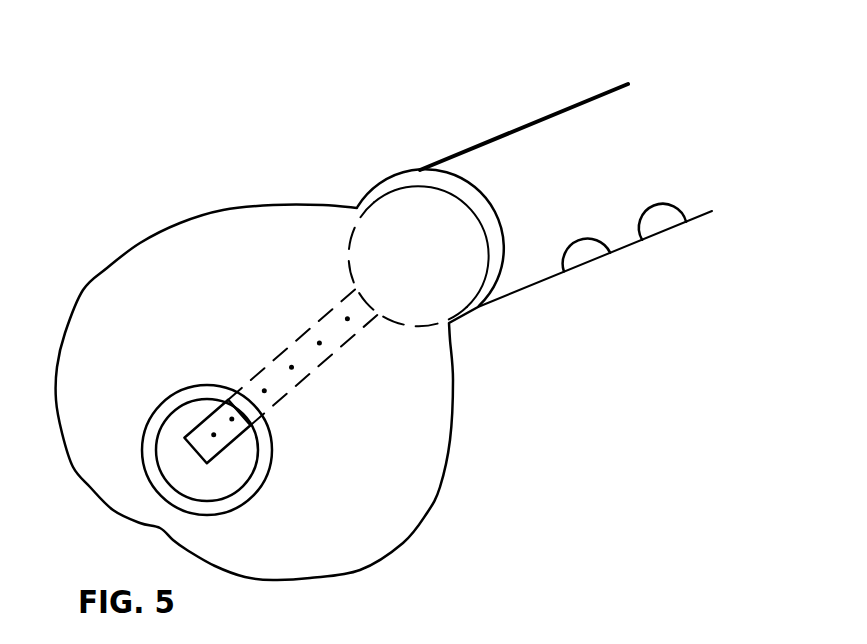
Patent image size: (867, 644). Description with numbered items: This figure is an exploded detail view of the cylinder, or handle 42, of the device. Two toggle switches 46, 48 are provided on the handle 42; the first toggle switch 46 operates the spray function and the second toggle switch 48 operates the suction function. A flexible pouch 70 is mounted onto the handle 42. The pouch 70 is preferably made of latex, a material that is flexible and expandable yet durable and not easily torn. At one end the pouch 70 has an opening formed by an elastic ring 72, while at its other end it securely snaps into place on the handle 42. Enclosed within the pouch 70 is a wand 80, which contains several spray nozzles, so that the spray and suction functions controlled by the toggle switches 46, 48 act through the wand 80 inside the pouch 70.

The handle 42 is at (537, 148).
The toggle switch 46 is at (583, 252).
The toggle switch 48 is at (662, 220).
The flexible pouch 70 is at (390, 398).
The elastic ring 72 is at (248, 488).
The wand 80 is at (268, 392).